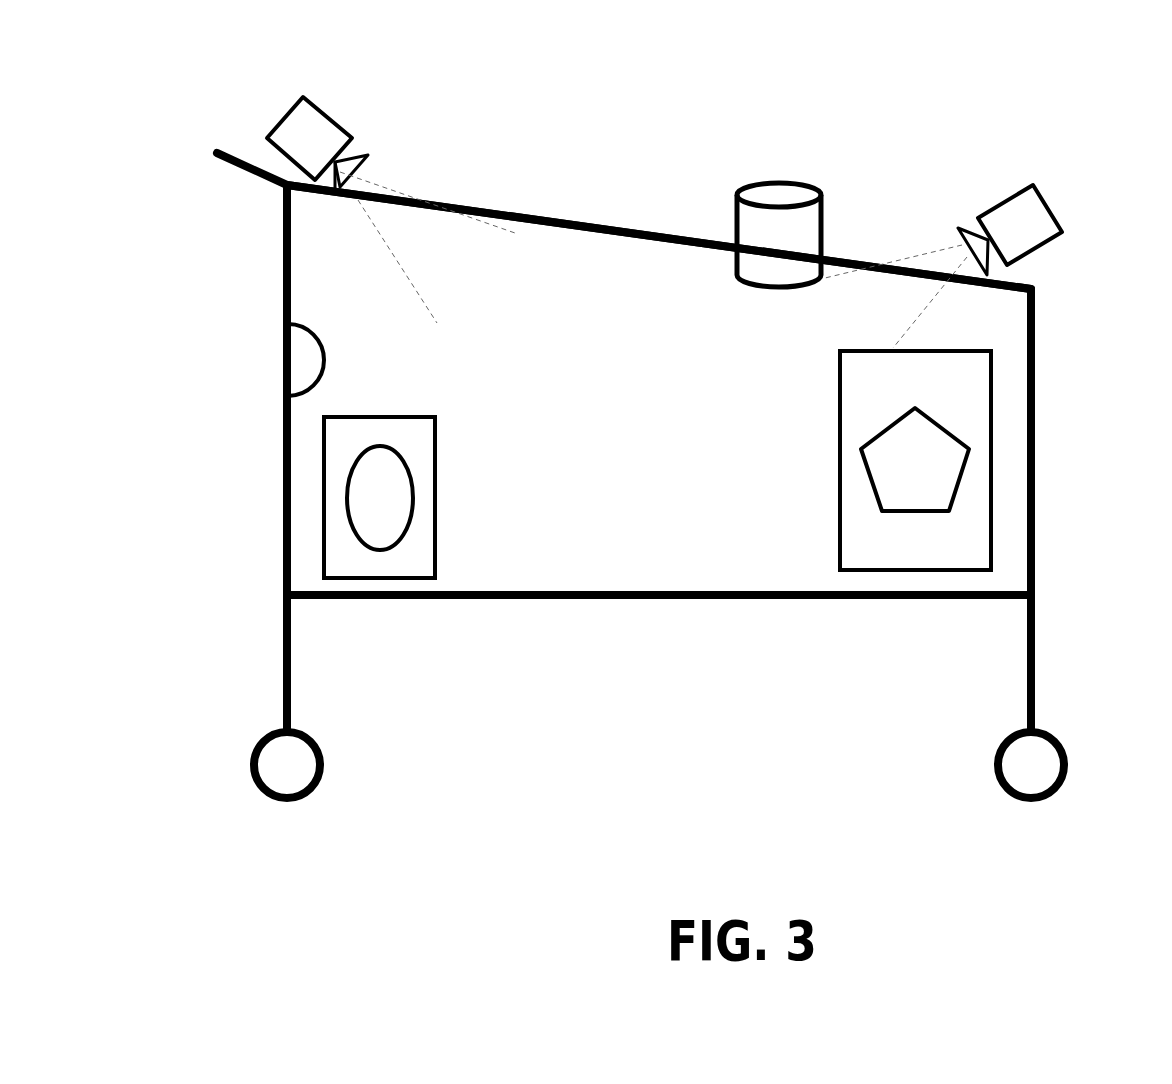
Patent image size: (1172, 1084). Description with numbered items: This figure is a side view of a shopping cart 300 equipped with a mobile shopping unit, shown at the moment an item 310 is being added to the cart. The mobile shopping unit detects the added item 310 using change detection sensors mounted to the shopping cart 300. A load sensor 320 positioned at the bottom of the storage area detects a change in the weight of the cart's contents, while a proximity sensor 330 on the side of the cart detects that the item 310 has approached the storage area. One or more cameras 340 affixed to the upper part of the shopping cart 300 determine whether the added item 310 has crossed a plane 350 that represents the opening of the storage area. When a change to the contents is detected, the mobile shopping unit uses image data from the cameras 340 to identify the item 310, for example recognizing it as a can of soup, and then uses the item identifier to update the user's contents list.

The shopping cart 300 is at (1038, 407).
The item 310 is at (804, 176).
The load sensor 320 is at (634, 600).
The proximity sensor 330 is at (304, 362).
The cameras 340 is at (324, 106).
The plane 350 is at (649, 229).